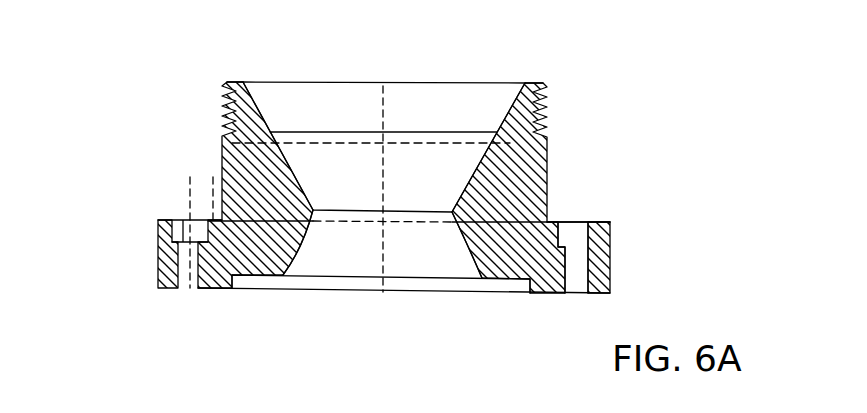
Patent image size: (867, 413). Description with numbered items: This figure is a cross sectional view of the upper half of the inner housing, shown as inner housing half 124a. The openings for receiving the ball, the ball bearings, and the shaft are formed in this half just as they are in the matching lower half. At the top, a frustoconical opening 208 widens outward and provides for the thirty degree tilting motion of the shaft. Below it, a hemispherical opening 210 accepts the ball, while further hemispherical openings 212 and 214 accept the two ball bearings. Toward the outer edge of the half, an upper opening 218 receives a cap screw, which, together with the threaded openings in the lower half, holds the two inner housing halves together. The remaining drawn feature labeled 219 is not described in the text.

The receptacle body 124a is at (222, 163).
The tapered bore 208 is at (432, 95).
The cavity 210 is at (434, 262).
The cavity side wall 212 is at (479, 268).
The bottom plate 214 is at (271, 268).
The right flange recess 218 is at (580, 228).
The left flange 219 is at (163, 214).